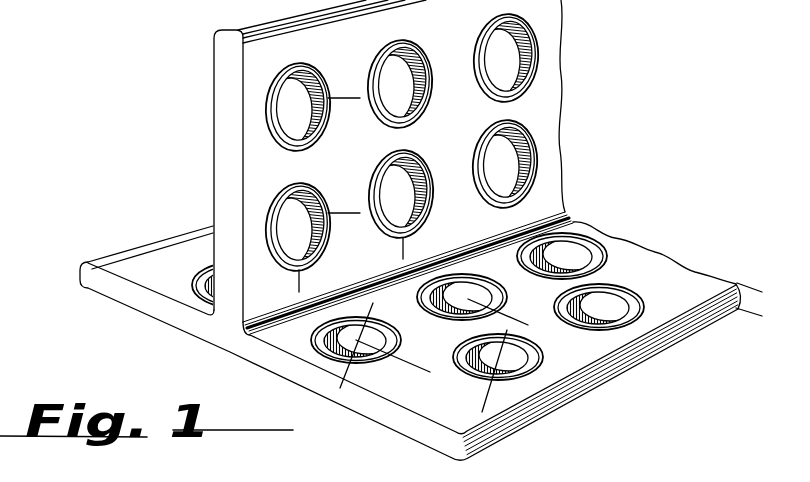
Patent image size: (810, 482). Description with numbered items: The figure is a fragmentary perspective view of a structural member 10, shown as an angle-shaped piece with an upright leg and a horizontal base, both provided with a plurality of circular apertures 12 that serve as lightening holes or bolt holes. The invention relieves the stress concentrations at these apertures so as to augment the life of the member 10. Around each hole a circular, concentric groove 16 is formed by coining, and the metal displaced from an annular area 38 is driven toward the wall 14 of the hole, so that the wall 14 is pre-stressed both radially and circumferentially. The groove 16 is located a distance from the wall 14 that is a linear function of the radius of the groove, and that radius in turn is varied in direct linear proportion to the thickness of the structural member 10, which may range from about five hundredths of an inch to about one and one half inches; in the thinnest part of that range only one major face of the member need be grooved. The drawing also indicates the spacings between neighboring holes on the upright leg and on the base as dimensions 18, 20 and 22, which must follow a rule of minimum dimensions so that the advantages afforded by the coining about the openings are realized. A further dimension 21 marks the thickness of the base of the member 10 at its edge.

The structural member 10 is at (609, 375).
The circular apertures 12 is at (492, 50).
The wall of hole 14 is at (517, 72).
The circular concentric groove 16 is at (535, 135).
The dimension 18 is at (403, 249).
The dimension 20 is at (349, 98).
The plate thickness 21 is at (751, 245).
The dimension 22 is at (483, 400).
The annular area 38 is at (595, 242).